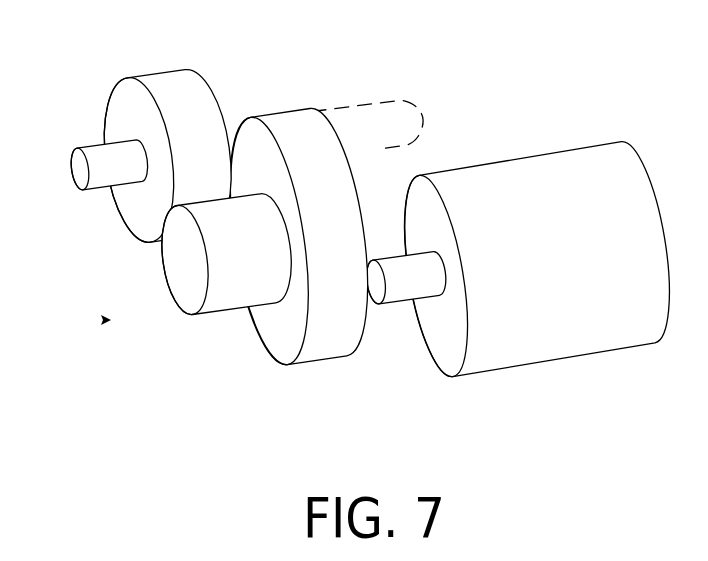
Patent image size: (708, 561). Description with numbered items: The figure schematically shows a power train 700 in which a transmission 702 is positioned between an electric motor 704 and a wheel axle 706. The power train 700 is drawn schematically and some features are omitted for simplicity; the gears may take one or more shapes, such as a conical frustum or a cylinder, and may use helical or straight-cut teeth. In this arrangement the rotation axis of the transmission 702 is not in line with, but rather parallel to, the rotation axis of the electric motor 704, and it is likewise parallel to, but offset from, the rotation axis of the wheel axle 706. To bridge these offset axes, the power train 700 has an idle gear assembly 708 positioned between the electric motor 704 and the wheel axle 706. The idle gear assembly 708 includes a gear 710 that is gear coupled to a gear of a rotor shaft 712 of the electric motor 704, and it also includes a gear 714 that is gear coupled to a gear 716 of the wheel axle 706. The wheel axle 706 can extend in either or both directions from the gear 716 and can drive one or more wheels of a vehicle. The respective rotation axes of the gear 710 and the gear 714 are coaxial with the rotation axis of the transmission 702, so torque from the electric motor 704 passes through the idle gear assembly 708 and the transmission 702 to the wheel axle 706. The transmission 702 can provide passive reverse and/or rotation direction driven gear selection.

The power train 700 is at (346, 201).
The transmission 702 is at (264, 116).
The electric motor 704 is at (620, 138).
The wheel axle 706 is at (88, 144).
The idle gear assembly 708 is at (103, 320).
The gear 710 is at (397, 173).
The rotor shaft 712 is at (436, 266).
The gear 714 is at (167, 283).
The gear 716 is at (150, 72).